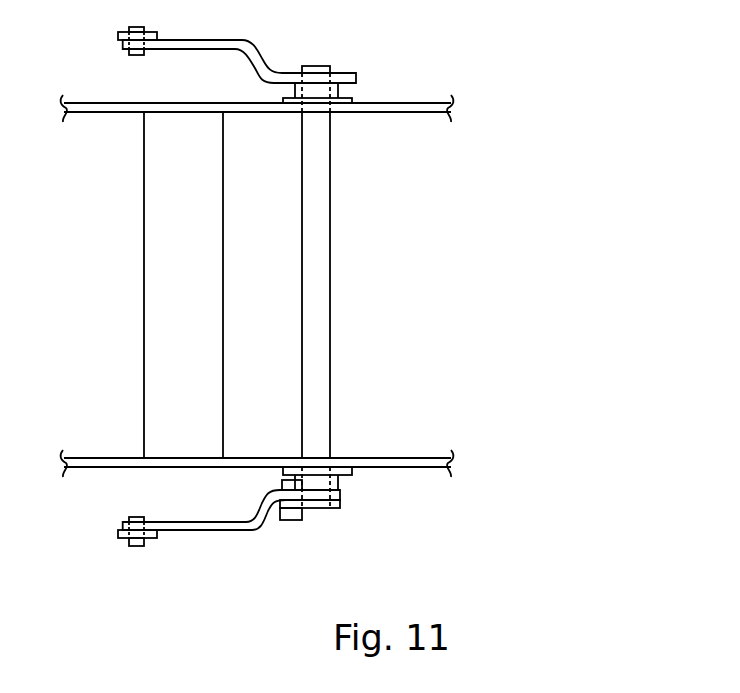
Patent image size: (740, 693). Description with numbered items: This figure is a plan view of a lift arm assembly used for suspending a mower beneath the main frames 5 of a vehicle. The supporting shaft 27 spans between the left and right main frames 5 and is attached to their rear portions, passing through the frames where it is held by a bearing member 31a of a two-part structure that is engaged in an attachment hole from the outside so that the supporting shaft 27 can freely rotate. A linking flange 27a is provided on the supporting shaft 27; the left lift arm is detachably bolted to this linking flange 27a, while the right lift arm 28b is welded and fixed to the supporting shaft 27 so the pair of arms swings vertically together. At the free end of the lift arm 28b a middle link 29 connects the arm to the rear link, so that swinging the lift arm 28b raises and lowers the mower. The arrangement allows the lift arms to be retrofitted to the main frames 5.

The main frame 5 is at (387, 113).
The supporting shaft 27 is at (330, 273).
The linking flange 27a is at (334, 517).
The right lift arm 28b is at (180, 50).
The middle link 29 is at (118, 37).
The bearing member 31a is at (294, 92).